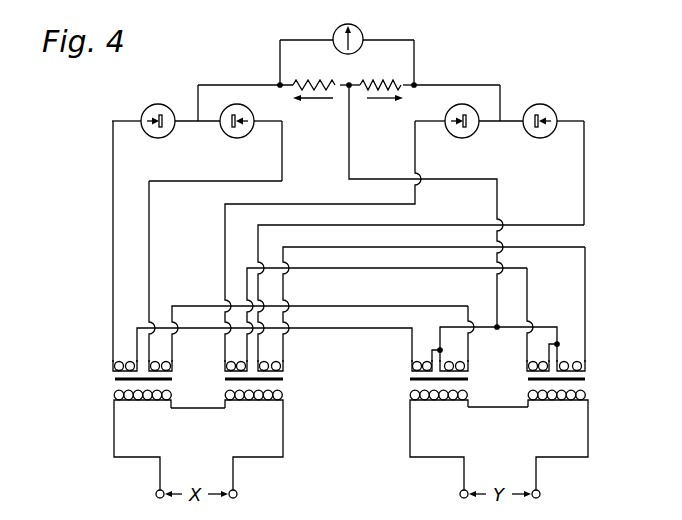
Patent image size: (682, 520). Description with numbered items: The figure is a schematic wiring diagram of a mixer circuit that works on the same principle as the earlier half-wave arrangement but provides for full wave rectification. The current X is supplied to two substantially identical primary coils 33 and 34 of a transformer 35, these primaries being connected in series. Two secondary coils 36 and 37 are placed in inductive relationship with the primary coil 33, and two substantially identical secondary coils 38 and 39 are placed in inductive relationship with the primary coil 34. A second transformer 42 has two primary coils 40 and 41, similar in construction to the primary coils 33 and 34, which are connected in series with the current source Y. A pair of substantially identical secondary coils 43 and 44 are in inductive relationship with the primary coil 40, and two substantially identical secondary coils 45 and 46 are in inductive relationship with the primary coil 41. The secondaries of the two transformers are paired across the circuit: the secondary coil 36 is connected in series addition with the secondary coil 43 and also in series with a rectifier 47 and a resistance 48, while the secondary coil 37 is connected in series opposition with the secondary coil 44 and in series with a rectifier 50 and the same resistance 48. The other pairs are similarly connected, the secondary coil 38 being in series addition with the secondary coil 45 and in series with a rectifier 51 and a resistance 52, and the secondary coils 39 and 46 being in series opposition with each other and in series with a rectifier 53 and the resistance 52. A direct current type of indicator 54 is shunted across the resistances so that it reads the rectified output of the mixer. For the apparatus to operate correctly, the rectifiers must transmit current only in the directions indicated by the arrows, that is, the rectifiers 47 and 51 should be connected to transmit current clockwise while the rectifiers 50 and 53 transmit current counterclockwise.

The primary coil 33 is at (136, 404).
The primary coil 34 is at (248, 404).
The transformer 35 is at (112, 380).
The secondary coil 36 is at (125, 356).
The secondary coil 37 is at (160, 356).
The secondary coil 38 is at (236, 356).
The secondary coil 39 is at (270, 356).
The primary coil 40 is at (428, 403).
The primary coil 41 is at (572, 402).
The transformer 42 is at (590, 379).
The secondary coil 43 is at (422, 354).
The secondary coil 44 is at (454, 354).
The secondary coil 45 is at (538, 356).
The secondary coil 46 is at (571, 352).
The rectifier 47 is at (148, 137).
The resistance 48 is at (332, 82).
The rectifier 50 is at (227, 137).
The rectifier 51 is at (458, 138).
The resistance 52 is at (397, 82).
The rectifier 53 is at (538, 138).
The direct current indicator 54 is at (363, 29).